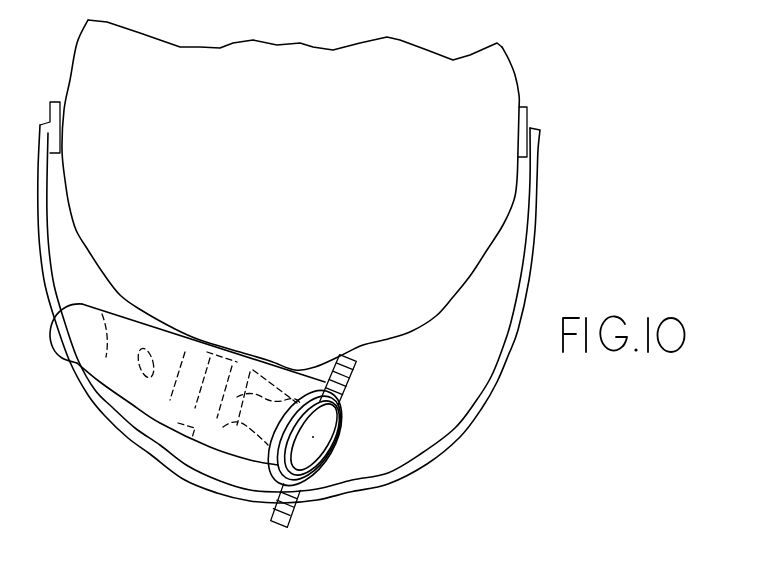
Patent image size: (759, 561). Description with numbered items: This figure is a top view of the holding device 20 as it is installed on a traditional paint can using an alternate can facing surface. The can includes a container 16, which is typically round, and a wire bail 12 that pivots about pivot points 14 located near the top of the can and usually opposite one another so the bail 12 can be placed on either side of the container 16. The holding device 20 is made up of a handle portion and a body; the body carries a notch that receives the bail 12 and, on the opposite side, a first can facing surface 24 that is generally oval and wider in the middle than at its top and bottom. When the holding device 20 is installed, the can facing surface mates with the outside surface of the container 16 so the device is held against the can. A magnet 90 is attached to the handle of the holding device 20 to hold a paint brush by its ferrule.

The bail 12 is at (537, 235).
The pivot points 14 is at (50, 100).
The container 16 is at (294, 175).
The holding device 20 is at (136, 436).
The first can facing surface 24 is at (340, 395).
The magnet 90 is at (335, 430).